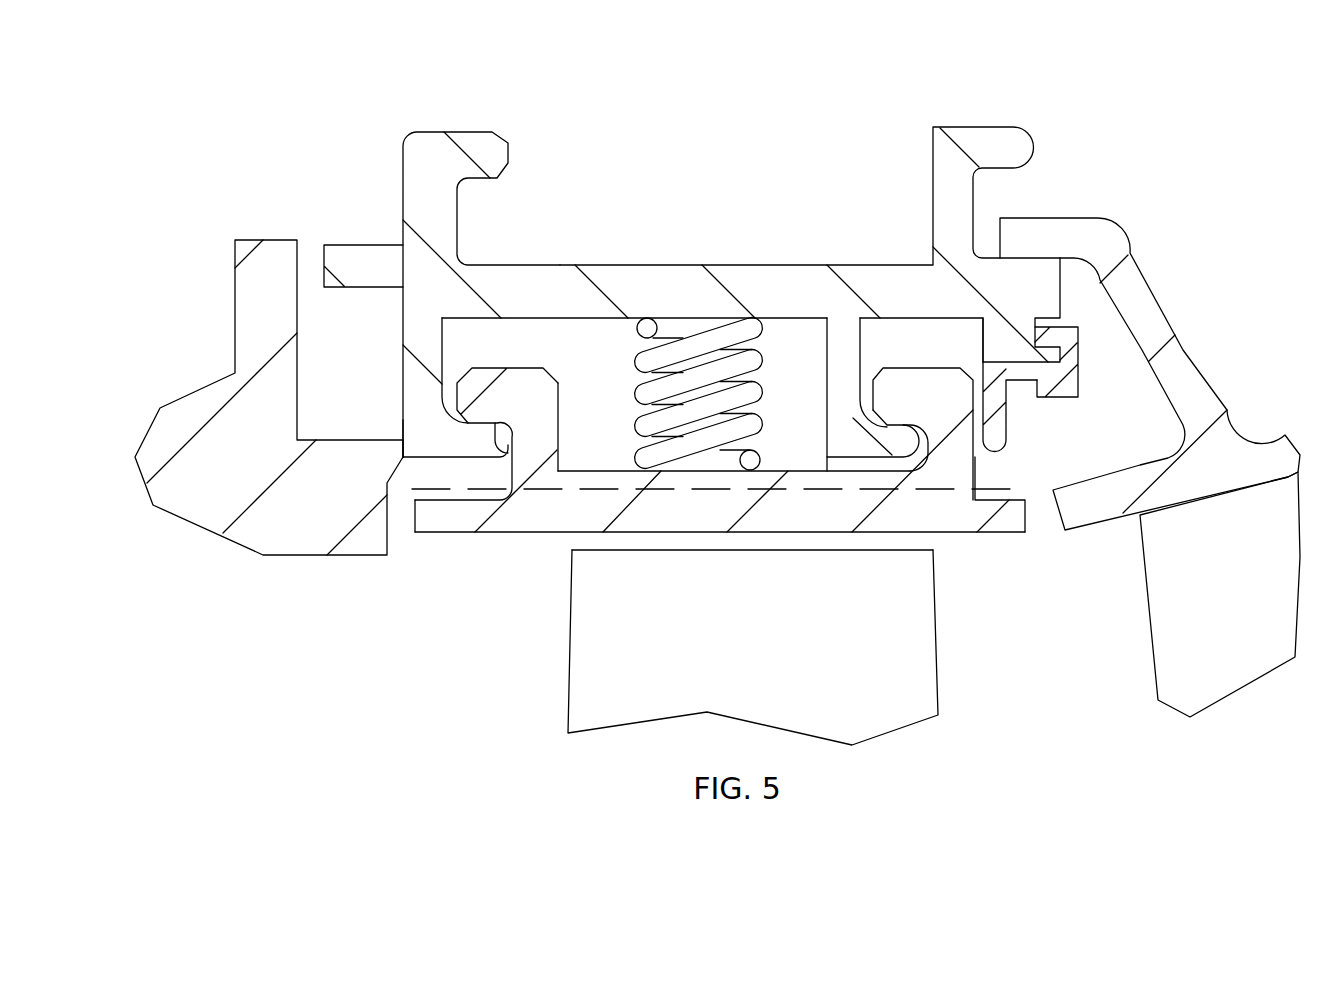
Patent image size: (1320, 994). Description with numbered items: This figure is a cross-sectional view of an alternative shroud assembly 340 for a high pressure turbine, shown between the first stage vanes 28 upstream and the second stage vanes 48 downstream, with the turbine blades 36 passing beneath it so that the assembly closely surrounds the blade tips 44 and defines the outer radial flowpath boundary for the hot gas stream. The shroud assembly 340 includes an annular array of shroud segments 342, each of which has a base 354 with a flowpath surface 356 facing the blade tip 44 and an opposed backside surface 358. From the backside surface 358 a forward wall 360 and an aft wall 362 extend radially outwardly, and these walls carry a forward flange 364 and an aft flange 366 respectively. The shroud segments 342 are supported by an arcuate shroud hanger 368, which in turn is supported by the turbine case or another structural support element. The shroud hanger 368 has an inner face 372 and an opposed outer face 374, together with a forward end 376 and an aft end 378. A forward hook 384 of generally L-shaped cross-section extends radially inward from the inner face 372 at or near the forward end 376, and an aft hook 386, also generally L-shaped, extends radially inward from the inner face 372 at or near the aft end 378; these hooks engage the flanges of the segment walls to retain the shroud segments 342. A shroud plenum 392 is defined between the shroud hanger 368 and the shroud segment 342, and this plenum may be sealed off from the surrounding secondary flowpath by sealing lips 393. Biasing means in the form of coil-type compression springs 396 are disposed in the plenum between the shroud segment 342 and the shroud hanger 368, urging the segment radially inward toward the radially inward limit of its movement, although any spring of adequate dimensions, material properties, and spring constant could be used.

The first stage vanes 28 is at (262, 631).
The turbine blades 36 is at (726, 620).
The tips 44 is at (572, 549).
The second stage vanes 48 is at (1187, 596).
The shroud assembly 340 is at (802, 286).
The shroud segments 342 is at (736, 417).
The base 354 is at (422, 525).
The flowpath surface 356 is at (500, 543).
The backside surface 358 is at (790, 461).
The forward wall 360 is at (550, 434).
The aft wall 362 is at (962, 472).
The forward flange 364 is at (507, 392).
The aft flange 366 is at (909, 390).
The shroud hanger 368 is at (385, 216).
The inner face 372 is at (804, 325).
The outer face 374 is at (837, 255).
The forward end 376 is at (378, 283).
The aft end 378 is at (1050, 303).
The forward hook 384 is at (418, 437).
The aft hook 386 is at (858, 445).
The shroud plenum 392 is at (574, 368).
The sealing lips 393 is at (508, 455).
The springs 396 is at (683, 330).